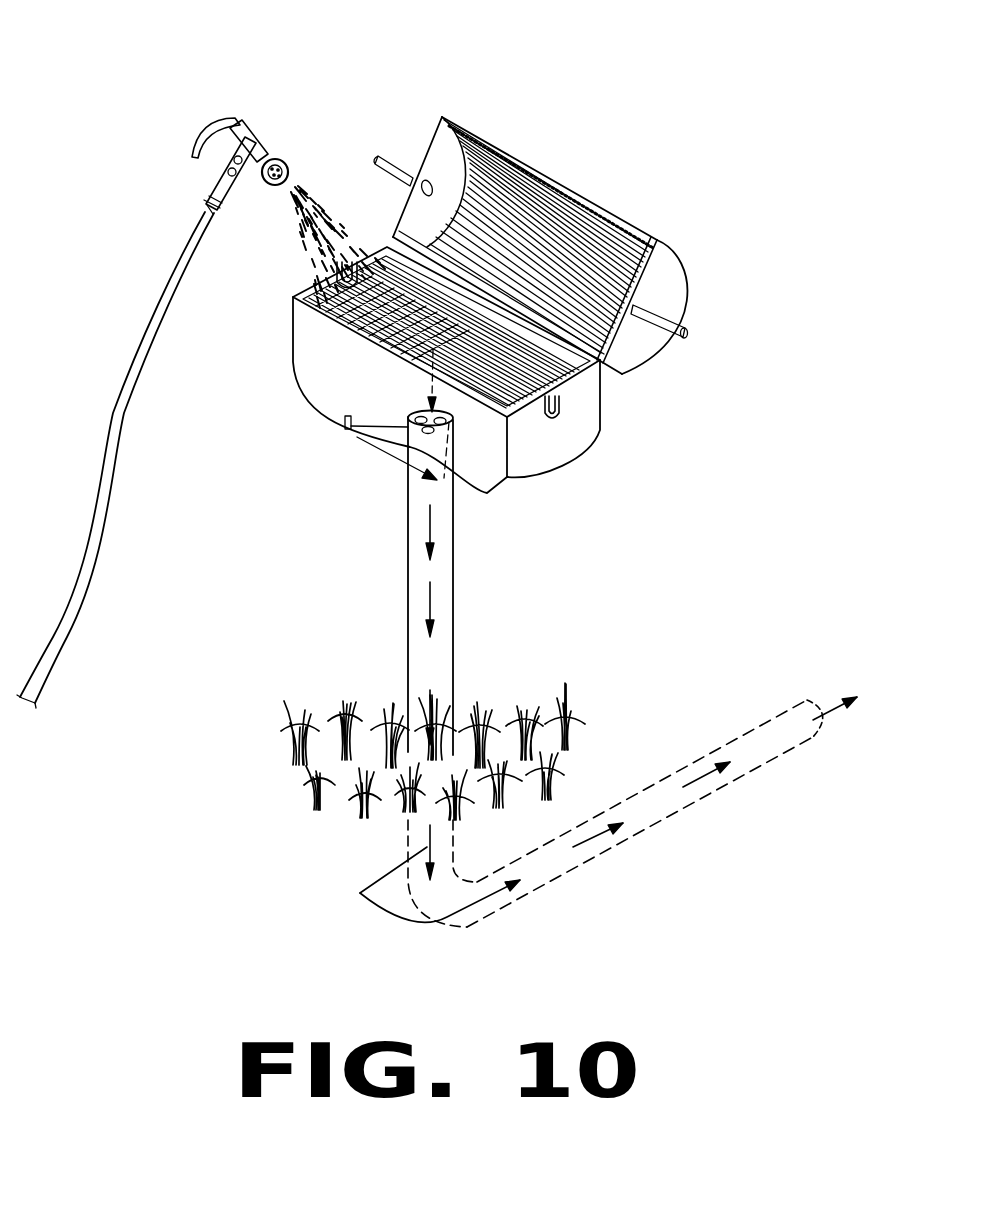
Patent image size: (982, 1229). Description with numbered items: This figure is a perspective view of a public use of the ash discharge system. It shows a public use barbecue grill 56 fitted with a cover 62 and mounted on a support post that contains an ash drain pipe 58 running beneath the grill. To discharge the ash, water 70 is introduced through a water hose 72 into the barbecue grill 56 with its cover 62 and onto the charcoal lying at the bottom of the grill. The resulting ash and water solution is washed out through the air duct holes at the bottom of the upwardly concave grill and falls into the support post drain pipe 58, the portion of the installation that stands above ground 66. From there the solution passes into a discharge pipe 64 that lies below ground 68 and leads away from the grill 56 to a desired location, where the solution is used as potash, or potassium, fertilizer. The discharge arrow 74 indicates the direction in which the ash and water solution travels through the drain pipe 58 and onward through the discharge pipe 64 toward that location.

The public use barbecue grill 56 is at (345, 424).
The ash drain pipe 58 is at (408, 613).
The cover 62 is at (443, 119).
The discharge pipe 64 is at (597, 847).
The above ground 66 is at (453, 612).
The below ground 68 is at (695, 757).
The water 70 is at (317, 200).
The water hose 72 is at (205, 197).
The discharge arrow 74 is at (420, 884).